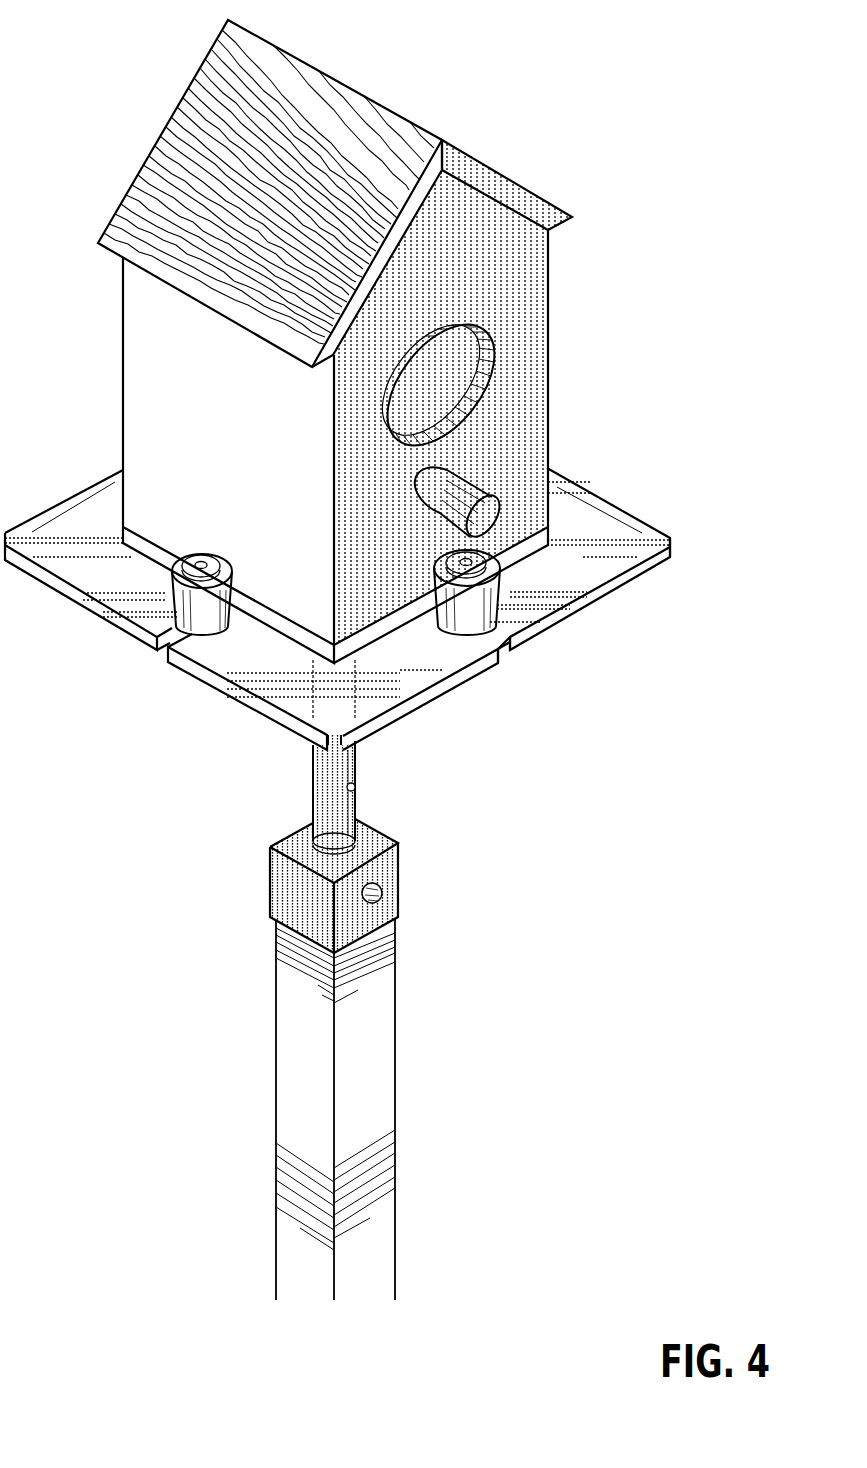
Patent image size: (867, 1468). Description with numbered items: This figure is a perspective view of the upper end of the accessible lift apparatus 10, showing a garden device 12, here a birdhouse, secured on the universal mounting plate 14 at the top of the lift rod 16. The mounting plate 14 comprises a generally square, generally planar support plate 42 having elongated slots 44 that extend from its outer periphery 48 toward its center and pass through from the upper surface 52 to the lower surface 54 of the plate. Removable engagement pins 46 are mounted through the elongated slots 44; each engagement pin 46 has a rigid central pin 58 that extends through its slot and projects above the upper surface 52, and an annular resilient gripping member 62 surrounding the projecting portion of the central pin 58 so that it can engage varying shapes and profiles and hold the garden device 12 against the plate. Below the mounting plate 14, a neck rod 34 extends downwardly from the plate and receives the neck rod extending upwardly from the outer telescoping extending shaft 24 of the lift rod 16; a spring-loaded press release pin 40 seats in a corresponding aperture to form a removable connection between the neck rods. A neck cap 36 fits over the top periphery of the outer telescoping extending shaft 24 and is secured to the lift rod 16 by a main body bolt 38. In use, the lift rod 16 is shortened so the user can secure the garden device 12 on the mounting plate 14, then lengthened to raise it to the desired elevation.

The accessible lift apparatus 10 is at (704, 49).
The garden device 12 is at (442, 139).
The universal mounting plate 14 is at (605, 397).
The lift rod 16 is at (398, 1040).
The outer telescoping extending shaft 24 is at (397, 1072).
The neck rod 34 is at (312, 803).
The neck cap 36 is at (270, 889).
The main body bolt 38 is at (383, 893).
The press release pin 40 is at (357, 786).
The support plate 42 is at (586, 484).
The elongated slot 44 is at (627, 541).
The engagement pin 46 is at (160, 606).
The outer periphery 48 is at (430, 690).
The upper surface 52 is at (77, 517).
The lower surface 54 is at (270, 713).
The rigid central pin 58 is at (204, 559).
The annular resilient gripping member 62 is at (233, 560).